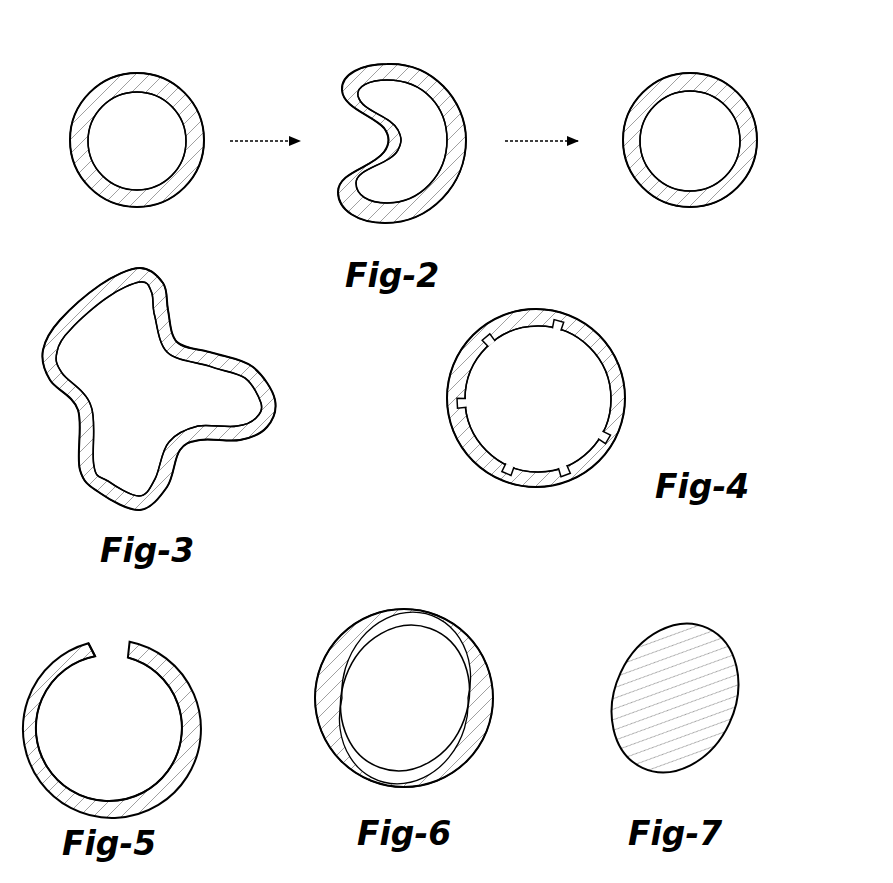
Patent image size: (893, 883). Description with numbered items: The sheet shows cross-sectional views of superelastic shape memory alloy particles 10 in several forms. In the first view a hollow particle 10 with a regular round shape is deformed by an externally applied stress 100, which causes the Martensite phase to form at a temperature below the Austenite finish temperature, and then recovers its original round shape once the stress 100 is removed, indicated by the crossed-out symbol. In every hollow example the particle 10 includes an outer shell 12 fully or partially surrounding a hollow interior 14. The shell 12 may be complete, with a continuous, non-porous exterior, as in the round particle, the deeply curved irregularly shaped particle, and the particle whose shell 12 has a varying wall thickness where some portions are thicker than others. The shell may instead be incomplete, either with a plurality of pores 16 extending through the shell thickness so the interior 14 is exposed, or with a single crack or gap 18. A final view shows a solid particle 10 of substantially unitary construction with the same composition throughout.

In FIG. 2, the superelastic SMA particle 10 is at (103, 43).
In FIG. 3, the superelastic SMA particle 10 is at (78, 256).
In FIG. 4, the superelastic SMA particle 10 is at (526, 289).
In FIG. 5, the superelastic SMA particle 10 is at (78, 613).
In FIG. 6, the superelastic SMA particle 10 is at (451, 582).
In FIG. 7, the superelastic SMA particle 10 is at (722, 582).
In FIG. 2, the outer shell 12 is at (167, 77).
In FIG. 3, the outer shell 12 is at (208, 352).
In FIG. 4, the outer shell 12 is at (588, 322).
In FIG. 5, the outer shell 12 is at (157, 645).
In FIG. 6, the outer shell 12 is at (460, 628).
In FIG. 7, the outer shell 12 is at (710, 628).
In FIG. 2, the hollow interior 14 is at (147, 145).
In FIG. 3, the hollow interior 14 is at (141, 392).
In FIG. 4, the hollow interior 14 is at (546, 408).
In FIG. 5, the hollow interior 14 is at (117, 734).
In FIG. 6, the hollow interior 14 is at (414, 704).
In FIG. 4, the pores 16 is at (490, 341).
In FIG. 5, the crack 18 is at (96, 648).
In FIG. 2, the applied stress 100 is at (554, 100).